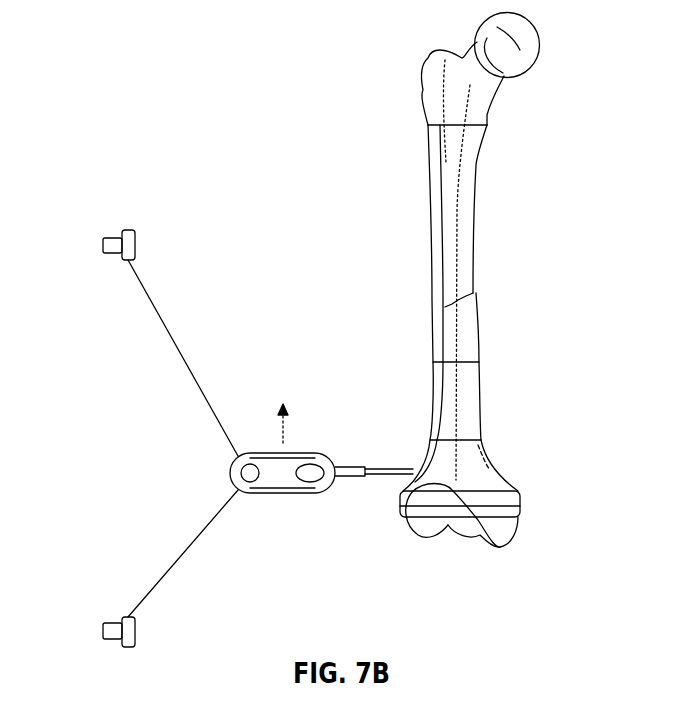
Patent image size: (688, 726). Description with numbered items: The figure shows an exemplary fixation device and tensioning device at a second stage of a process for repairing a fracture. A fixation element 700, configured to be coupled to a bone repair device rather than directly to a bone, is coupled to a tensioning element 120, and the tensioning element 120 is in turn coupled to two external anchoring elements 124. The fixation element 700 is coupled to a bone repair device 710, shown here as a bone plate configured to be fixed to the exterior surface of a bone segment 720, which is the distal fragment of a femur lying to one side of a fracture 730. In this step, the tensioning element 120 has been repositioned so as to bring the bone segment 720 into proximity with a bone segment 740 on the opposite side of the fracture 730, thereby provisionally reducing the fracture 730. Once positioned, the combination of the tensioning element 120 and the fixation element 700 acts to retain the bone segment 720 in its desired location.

The tensioning element 120 is at (285, 495).
The external anchoring elements 124 is at (113, 240).
The fixation element 700 is at (367, 478).
The bone repair device 710 is at (461, 280).
The bone segment 720 is at (472, 410).
The fracture 730 is at (473, 293).
The bone segment 740 is at (487, 97).